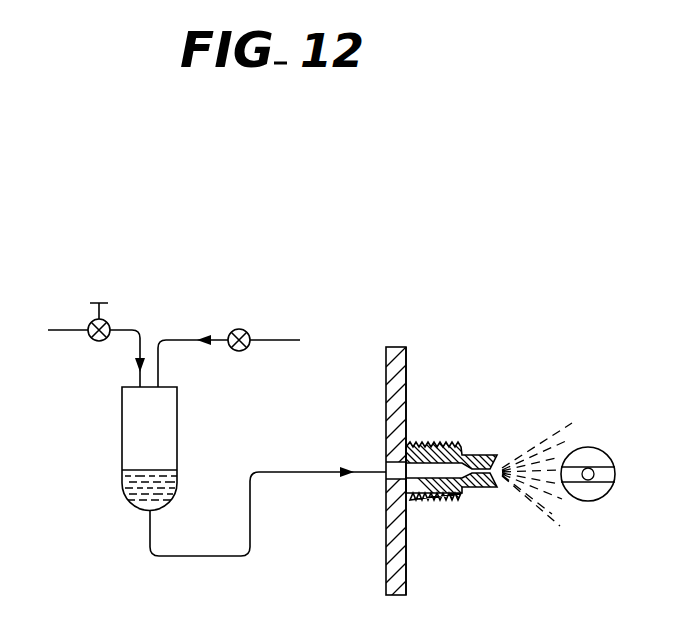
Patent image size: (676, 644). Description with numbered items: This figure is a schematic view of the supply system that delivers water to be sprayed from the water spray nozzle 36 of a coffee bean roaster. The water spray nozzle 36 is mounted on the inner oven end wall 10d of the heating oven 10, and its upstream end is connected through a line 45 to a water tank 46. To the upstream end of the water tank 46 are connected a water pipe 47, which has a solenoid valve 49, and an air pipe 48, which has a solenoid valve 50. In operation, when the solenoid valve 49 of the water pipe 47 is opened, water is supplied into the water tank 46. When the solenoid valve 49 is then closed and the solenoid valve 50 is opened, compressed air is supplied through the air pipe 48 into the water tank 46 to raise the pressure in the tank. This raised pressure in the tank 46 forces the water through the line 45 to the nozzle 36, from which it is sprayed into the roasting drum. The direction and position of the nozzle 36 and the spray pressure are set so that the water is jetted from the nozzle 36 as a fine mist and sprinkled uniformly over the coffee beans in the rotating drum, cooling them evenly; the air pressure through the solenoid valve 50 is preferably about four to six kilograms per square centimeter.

The heating oven 10 is at (373, 352).
The inner oven end wall 10d is at (407, 365).
The water spray nozzle 36 is at (479, 446).
The line 45 is at (308, 473).
The water tank 46 is at (122, 418).
The water pipe 47 is at (60, 330).
The air pipe 48 is at (182, 340).
The solenoid valve 49 is at (107, 320).
The solenoid valve 50 is at (241, 329).